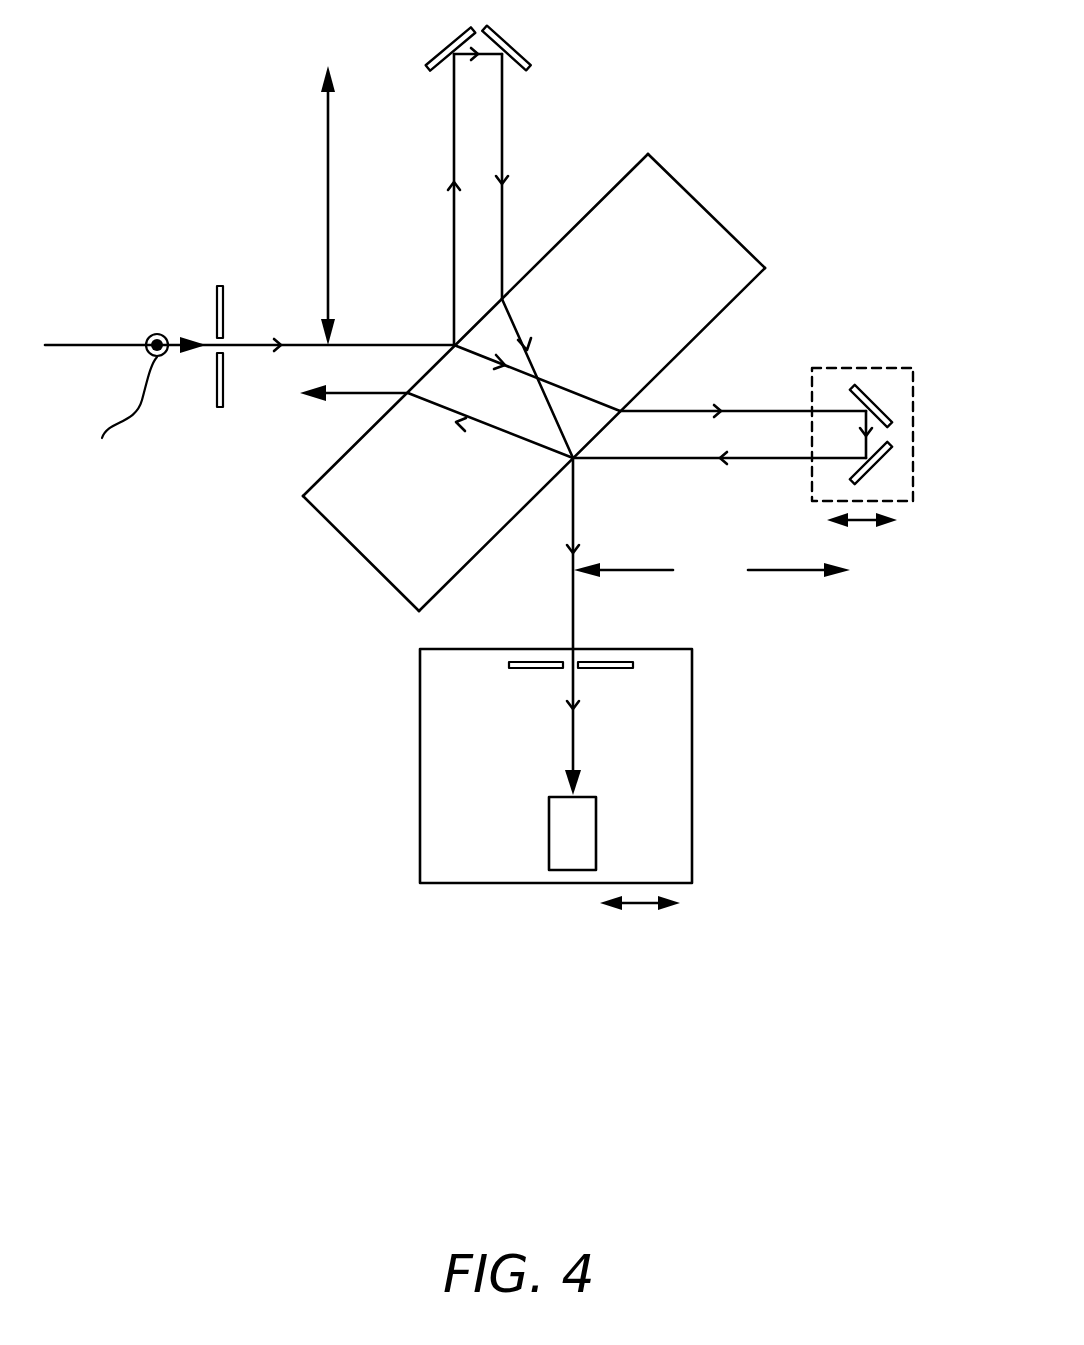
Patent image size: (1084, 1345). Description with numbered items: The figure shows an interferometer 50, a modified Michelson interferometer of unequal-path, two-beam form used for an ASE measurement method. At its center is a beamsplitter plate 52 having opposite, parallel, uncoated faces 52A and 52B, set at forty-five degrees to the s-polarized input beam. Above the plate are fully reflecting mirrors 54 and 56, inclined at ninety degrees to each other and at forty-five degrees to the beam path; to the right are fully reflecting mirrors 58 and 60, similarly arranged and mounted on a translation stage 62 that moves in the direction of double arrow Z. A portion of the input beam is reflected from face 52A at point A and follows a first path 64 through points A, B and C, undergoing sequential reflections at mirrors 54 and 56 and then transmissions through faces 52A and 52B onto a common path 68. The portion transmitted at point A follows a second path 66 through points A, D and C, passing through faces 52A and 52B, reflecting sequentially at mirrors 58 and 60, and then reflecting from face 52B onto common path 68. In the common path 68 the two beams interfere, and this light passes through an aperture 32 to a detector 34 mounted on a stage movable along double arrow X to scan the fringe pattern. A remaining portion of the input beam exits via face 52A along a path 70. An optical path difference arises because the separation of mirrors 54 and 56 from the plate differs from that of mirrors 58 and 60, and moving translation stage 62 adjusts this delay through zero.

The aperture 32 is at (617, 663).
The detector 34 is at (217, 308).
The interferometer 50 is at (250, 822).
The beamsplitter plate 52 is at (315, 545).
The face of beamsplitter plate 52A is at (347, 452).
The face of beamsplitter plate 52B is at (723, 310).
The fully reflecting mirror 54 is at (432, 62).
The fully reflecting mirror 56 is at (527, 62).
The fully reflecting mirror 58 is at (862, 388).
The fully reflecting mirror 60 is at (882, 455).
The translation stage 62 is at (828, 368).
The first path 64 is at (516, 325).
The second path 66 is at (566, 387).
The common path 68 is at (570, 523).
The path 70 is at (347, 395).